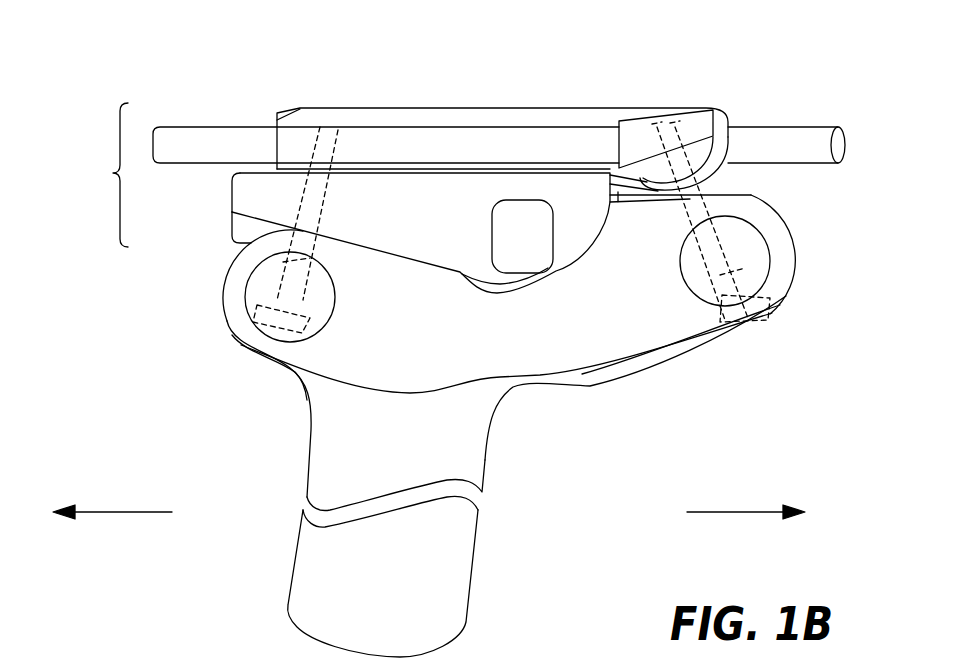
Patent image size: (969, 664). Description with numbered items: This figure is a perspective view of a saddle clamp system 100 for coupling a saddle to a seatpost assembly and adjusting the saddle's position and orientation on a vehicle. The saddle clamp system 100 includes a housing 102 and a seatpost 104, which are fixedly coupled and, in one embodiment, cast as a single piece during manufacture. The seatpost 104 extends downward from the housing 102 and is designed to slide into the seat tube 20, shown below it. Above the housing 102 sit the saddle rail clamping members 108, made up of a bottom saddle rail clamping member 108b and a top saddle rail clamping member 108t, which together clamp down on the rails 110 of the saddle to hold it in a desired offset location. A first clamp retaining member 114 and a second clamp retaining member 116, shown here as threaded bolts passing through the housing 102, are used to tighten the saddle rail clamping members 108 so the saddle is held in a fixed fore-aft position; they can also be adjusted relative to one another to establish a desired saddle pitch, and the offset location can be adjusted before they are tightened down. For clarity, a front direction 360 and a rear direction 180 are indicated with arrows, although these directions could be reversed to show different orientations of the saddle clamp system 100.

The saddle clamp system 100 is at (203, 55).
The saddle rail clamping members 108 is at (97, 175).
The top saddle rail clamping member 108t is at (276, 120).
The bottom saddle rail clamping member 108b is at (231, 203).
The rails 110 is at (843, 143).
The housing 102 is at (227, 278).
The first clamp retaining member 114 is at (273, 322).
The second clamp retaining member 116 is at (768, 320).
The seatpost 104 is at (483, 478).
The seat tube 20 is at (477, 540).
The front direction 360 is at (108, 512).
The rear direction 180 is at (725, 512).